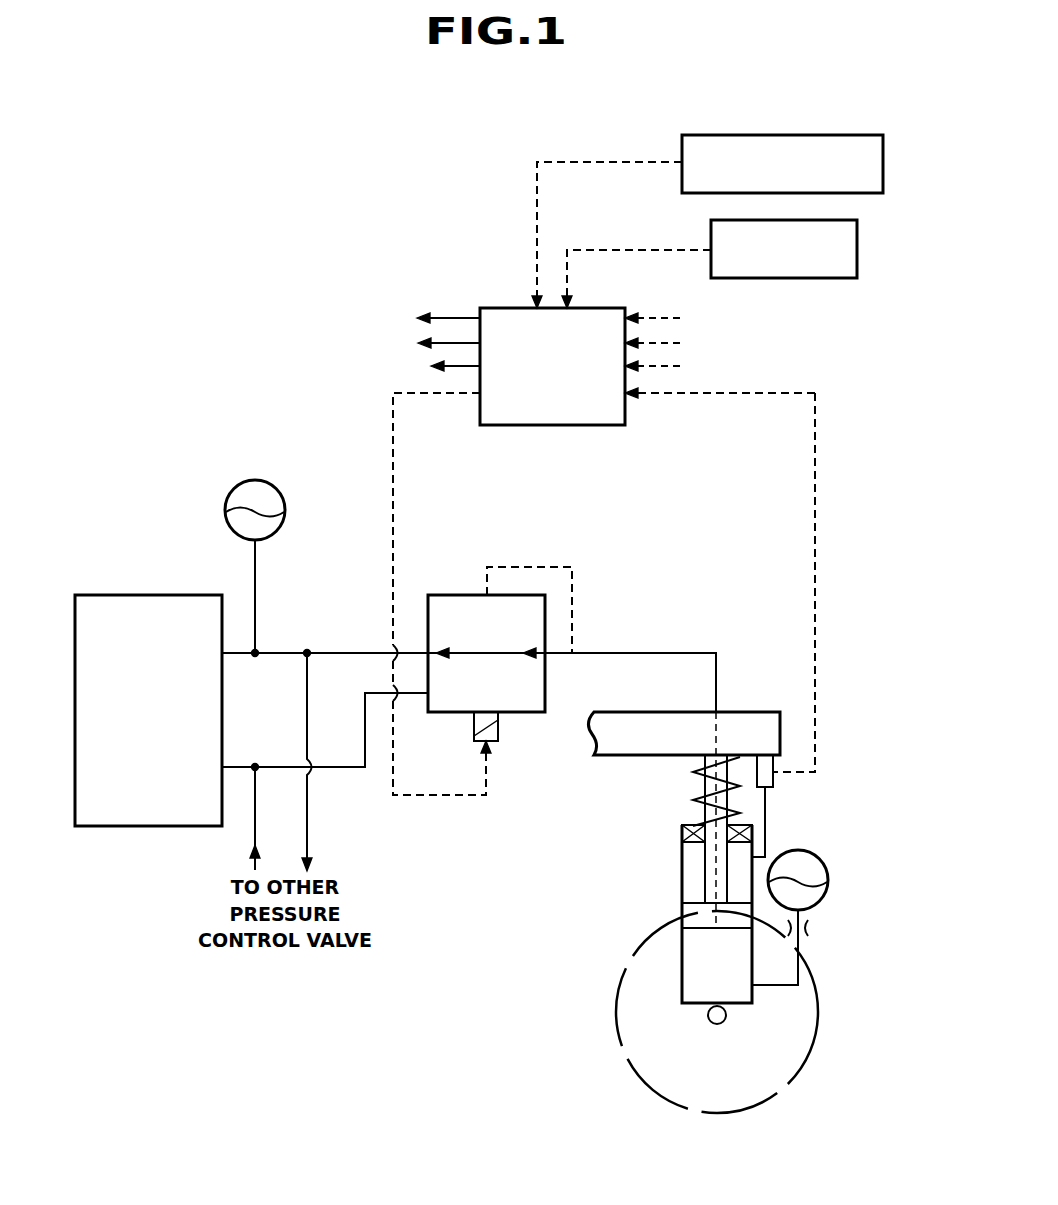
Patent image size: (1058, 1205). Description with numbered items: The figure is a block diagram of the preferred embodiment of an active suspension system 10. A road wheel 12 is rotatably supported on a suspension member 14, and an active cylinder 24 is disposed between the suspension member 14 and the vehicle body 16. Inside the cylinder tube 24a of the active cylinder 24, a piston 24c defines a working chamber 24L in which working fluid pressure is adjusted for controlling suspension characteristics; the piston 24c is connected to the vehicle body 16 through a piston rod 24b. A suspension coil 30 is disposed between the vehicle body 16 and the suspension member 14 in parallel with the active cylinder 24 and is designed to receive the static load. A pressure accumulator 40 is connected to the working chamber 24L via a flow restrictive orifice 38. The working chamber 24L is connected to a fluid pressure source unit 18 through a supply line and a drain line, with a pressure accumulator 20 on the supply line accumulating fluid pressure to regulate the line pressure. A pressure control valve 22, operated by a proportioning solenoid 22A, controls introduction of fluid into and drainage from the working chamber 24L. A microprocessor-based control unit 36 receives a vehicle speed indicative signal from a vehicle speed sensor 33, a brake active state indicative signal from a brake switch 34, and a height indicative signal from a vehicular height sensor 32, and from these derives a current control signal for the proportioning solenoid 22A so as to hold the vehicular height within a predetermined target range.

The active suspension system 10 is at (487, 860).
The road wheel 12 is at (616, 1022).
The suspension member 14 is at (716, 1024).
The vehicle body 16 is at (746, 712).
The fluid pressure source unit 18 is at (144, 595).
The pressure accumulator 20 is at (260, 480).
The pressure control valve 22 is at (461, 595).
The proportioning solenoid 22A is at (498, 727).
The active cylinder 24 is at (652, 879).
The cylinder tube 24a is at (682, 856).
The piston rod 24b is at (690, 790).
The piston 24c is at (690, 915).
The working chamber 24L is at (694, 969).
The suspension coil 30 is at (698, 759).
The vehicular height sensor 32 is at (773, 782).
The vehicle speed sensor 33 is at (754, 135).
The brake switch 34 is at (857, 250).
The control unit 36 is at (548, 425).
The flow restrictive orifice 38 is at (810, 930).
The pressure accumulator 40 is at (818, 860).